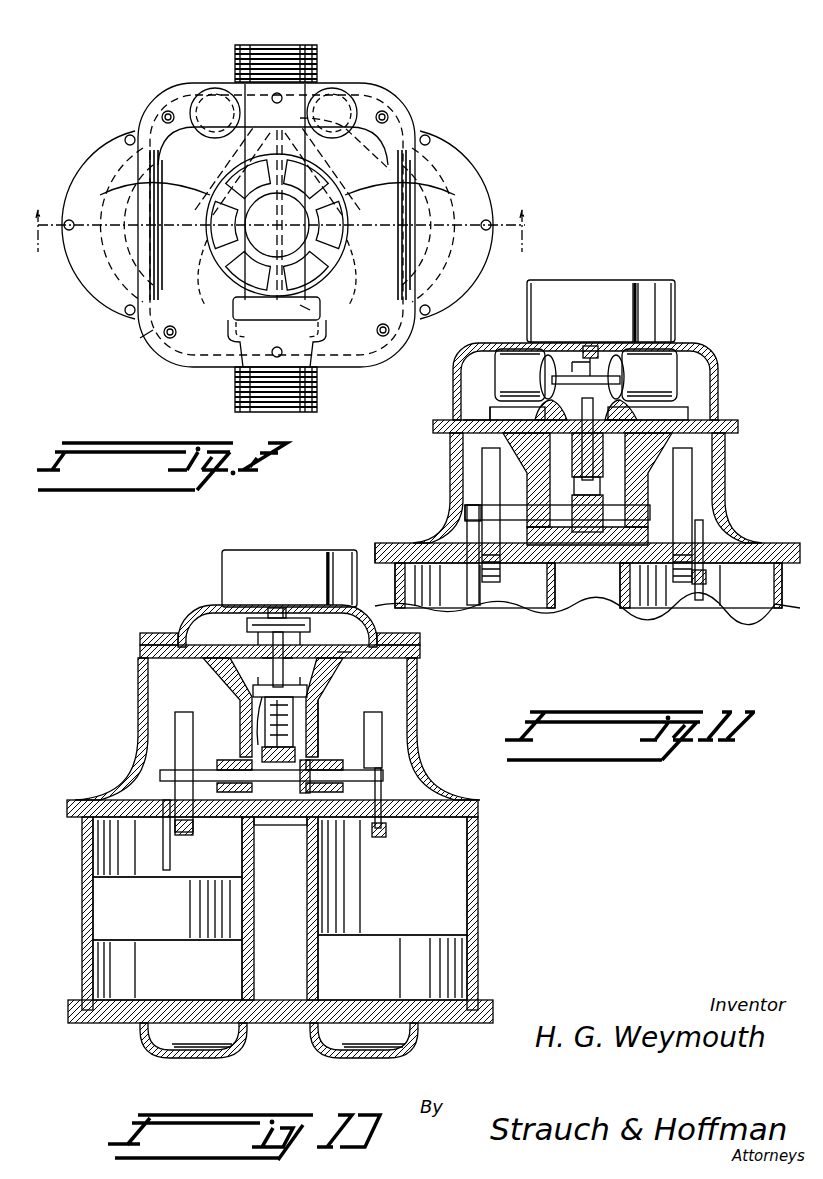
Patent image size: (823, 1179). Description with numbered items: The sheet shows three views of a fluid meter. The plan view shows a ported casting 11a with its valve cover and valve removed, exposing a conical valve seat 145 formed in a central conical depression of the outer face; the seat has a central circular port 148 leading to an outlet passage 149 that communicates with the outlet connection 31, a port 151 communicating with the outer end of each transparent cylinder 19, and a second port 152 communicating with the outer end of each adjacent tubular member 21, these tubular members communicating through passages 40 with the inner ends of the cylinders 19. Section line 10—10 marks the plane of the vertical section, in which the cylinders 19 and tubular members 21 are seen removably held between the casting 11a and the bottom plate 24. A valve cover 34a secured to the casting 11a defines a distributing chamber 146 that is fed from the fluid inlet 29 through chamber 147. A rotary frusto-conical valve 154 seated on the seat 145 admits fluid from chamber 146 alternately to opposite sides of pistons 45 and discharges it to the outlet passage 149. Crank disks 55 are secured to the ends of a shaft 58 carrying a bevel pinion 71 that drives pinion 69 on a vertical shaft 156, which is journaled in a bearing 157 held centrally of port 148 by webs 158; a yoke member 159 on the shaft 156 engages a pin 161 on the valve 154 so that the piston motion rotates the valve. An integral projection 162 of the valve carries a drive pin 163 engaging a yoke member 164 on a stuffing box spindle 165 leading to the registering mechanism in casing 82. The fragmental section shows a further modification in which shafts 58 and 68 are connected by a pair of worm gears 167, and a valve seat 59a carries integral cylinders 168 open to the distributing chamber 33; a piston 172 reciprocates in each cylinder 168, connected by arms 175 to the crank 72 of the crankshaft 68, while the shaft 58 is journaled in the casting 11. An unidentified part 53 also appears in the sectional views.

In FIG. 9, the section line 10 is at (276, 214).
In FIG. 11, the casting 11 is at (455, 465).
In FIG. 9, the ported casting 11a is at (261, 226).
In FIG. 10, the ported casting 11a is at (140, 700).
In FIG. 9, the transparent cylinders 19 is at (103, 270).
In FIG. 11, the transparent cylinders 19 is at (465, 585).
In FIG. 10, the transparent cylinders 19 is at (307, 897).
In FIG. 9, the tubular members 21 is at (203, 92).
In FIG. 10, the bottom plate 24 is at (290, 1012).
In FIG. 9, the fluid inlet 29 is at (305, 405).
In FIG. 9, the outlet connection 31 is at (300, 50).
In FIG. 11, the distributing chamber 33 is at (480, 364).
In FIG. 10, the valve cover 34a is at (186, 626).
In FIG. 9, the passages 40 is at (150, 120).
In FIG. 10, the passages 40 is at (175, 1040).
In FIG. 10, the pistons 45 is at (107, 893).
In FIG. 11, the tie rod 53 is at (698, 588).
In FIG. 10, the tie rod 53 is at (168, 868).
In FIG. 11, the crank disks 55 is at (480, 475).
In FIG. 10, the crank disks 55 is at (182, 735).
In FIG. 11, the shaft 58 is at (572, 530).
In FIG. 10, the shaft 58 is at (258, 742).
In FIG. 11, the valve seat 59a is at (470, 418).
In FIG. 11, the crankshaft 68 is at (580, 448).
In FIG. 10, the pinion 69 is at (295, 752).
In FIG. 10, the bevel pinion 71 is at (310, 768).
In FIG. 11, the crank 72 is at (517, 413).
In FIG. 11, the casing 82 is at (622, 292).
In FIG. 10, the casing 82 is at (282, 560).
In FIG. 9, the conical valve seat 145 is at (176, 333).
In FIG. 11, the conical valve seat 145 is at (393, 585).
In FIG. 10, the conical valve seat 145 is at (342, 645).
In FIG. 10, the distributing chamber 146 is at (212, 605).
In FIG. 9, the chamber 147 is at (310, 308).
In FIG. 9, the central circular port 148 is at (277, 225).
In FIG. 10, the central circular port 148 is at (318, 713).
In FIG. 9, the outlet passage 149 is at (368, 95).
In FIG. 10, the outlet passage 149 is at (287, 812).
In FIG. 9, the port 151 is at (276, 272).
In FIG. 10, the port 151 is at (232, 672).
In FIG. 9, the second port 152 is at (418, 190).
In FIG. 10, the rotary frusto-conical valve 154 is at (275, 610).
In FIG. 10, the vertical shaft 156 is at (265, 725).
In FIG. 10, the bearing 157 is at (263, 712).
In FIG. 10, the webs 158 is at (220, 801).
In FIG. 10, the yoke member 159 is at (279, 659).
In FIG. 10, the pin 161 is at (265, 697).
In FIG. 10, the integral projection 162 is at (290, 620).
In FIG. 10, the drive pin 163 is at (262, 650).
In FIG. 10, the yoke member 164 is at (250, 625).
In FIG. 10, the stuffing box spindle 165 is at (283, 608).
In FIG. 11, the worm gears 167 is at (600, 547).
In FIG. 11, the cylinders 168 is at (510, 350).
In FIG. 11, the piston 172 is at (592, 346).
In FIG. 11, the arms 175 is at (648, 412).